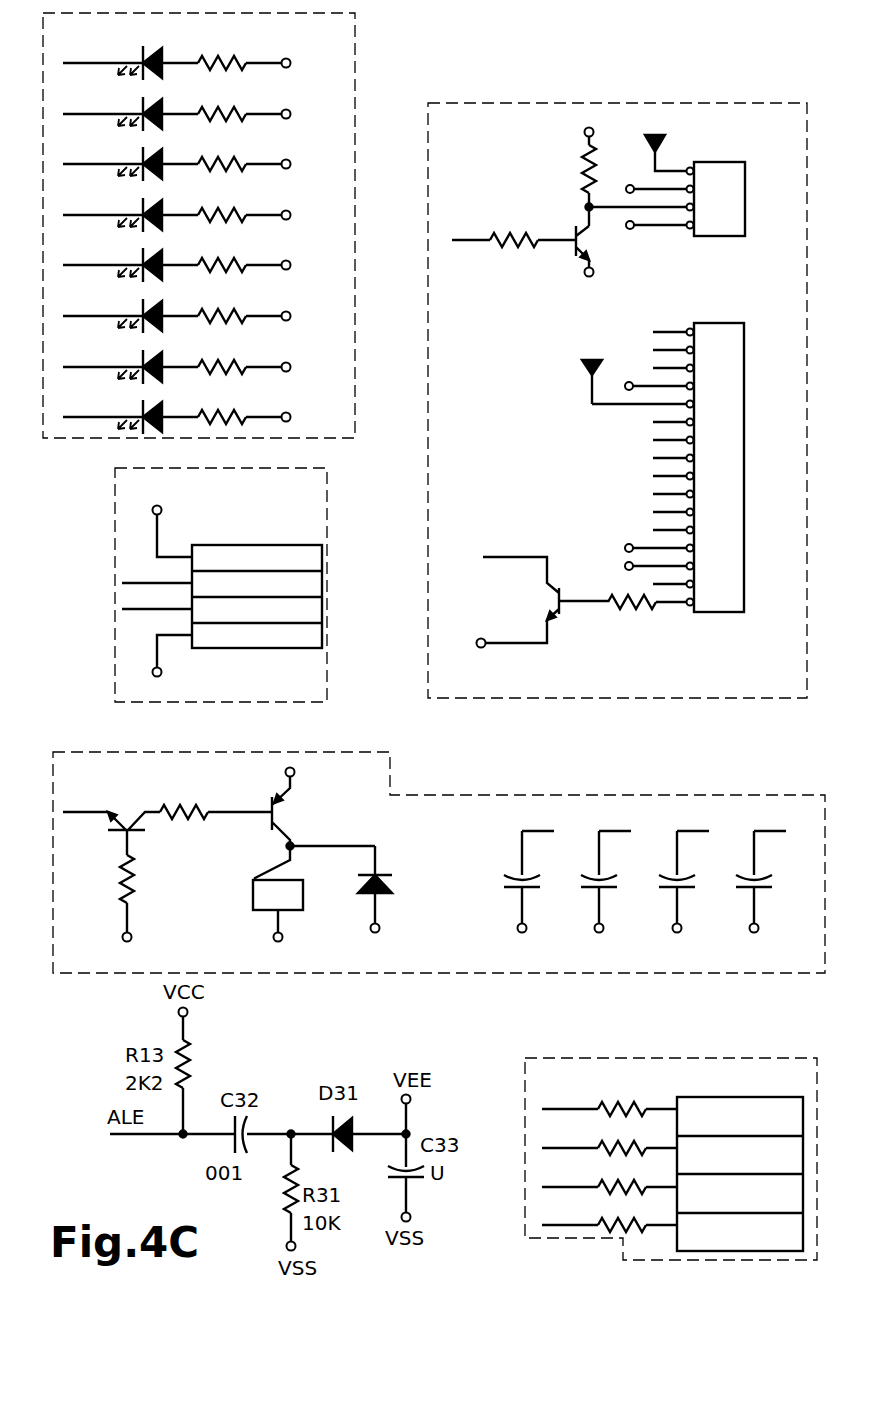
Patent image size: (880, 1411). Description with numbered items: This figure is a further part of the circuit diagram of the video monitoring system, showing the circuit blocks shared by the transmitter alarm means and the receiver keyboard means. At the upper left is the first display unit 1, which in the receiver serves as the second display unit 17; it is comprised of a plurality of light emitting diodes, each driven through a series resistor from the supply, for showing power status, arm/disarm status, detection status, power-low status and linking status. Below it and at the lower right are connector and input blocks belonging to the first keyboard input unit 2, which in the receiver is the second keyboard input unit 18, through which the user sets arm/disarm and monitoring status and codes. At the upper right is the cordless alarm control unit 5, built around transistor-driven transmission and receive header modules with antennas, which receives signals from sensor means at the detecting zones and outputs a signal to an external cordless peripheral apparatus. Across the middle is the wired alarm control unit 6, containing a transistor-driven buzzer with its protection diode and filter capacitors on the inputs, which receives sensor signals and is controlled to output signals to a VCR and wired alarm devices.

The first display unit 1 is at (262, 225).
The second display unit 17 is at (357, 56).
The first keyboard input unit 2 is at (466, 864).
The second keyboard input unit 18 is at (327, 662).
The cordless alarm control unit 5 is at (652, 103).
The wired alarm control unit 6 is at (750, 975).